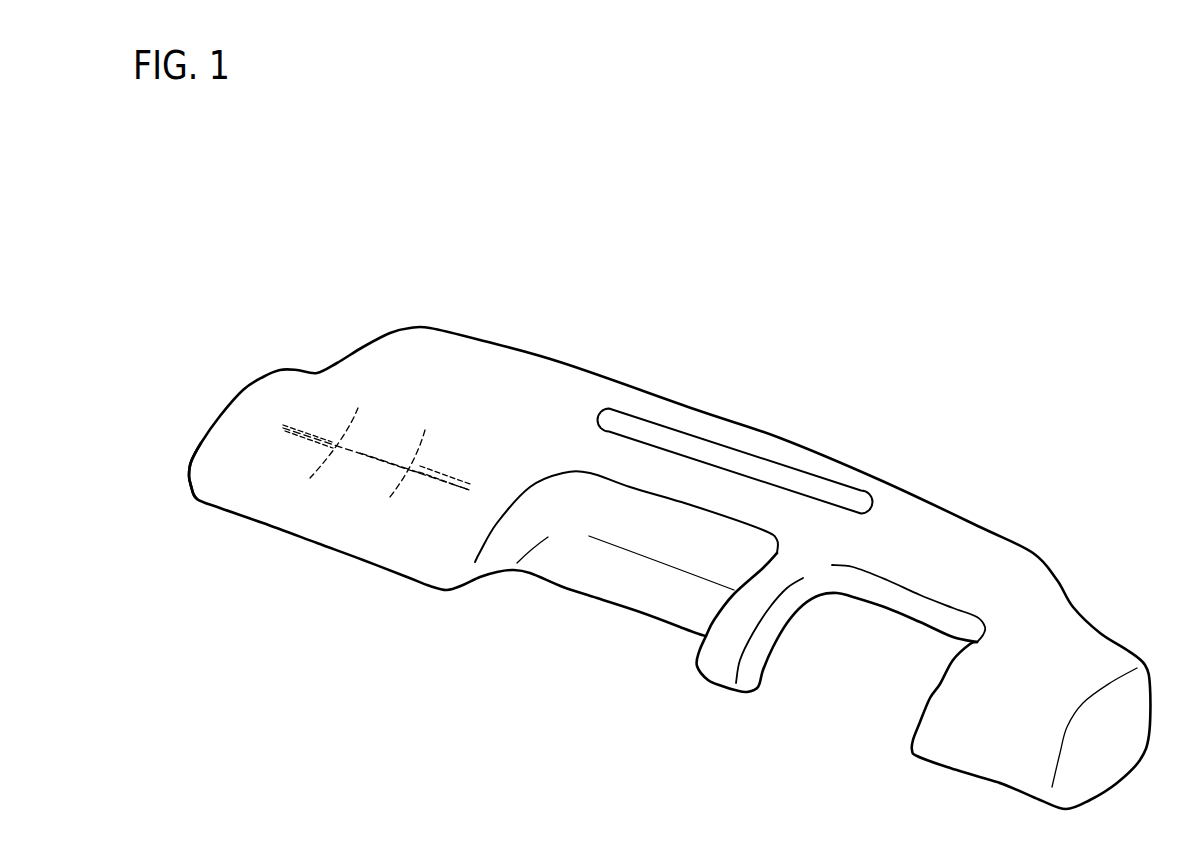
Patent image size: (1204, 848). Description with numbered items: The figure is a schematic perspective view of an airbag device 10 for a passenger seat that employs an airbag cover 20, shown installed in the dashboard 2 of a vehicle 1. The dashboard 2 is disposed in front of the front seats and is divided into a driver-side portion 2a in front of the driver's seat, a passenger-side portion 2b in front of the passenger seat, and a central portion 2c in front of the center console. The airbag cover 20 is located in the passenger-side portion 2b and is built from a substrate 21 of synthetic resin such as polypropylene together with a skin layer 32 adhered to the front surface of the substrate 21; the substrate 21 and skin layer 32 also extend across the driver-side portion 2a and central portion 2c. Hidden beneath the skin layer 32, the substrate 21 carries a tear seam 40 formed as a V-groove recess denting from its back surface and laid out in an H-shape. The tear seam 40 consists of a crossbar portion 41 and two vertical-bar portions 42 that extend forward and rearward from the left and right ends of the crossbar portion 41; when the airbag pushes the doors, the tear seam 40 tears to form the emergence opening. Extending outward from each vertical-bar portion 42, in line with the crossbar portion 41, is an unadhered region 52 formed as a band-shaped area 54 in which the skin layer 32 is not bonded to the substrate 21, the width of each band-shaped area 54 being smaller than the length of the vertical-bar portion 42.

The vehicle 1 is at (775, 322).
The dashboard 2 is at (669, 529).
The driver-side portion 2a is at (1020, 460).
The passenger-side portion 2b is at (483, 320).
The central portion 2c is at (788, 407).
The airbag device 10 is at (329, 506).
The airbag cover 20 is at (479, 585).
The substrate 21 is at (232, 500).
The skin layer 32 is at (213, 477).
The tear seam 40 is at (382, 445).
The crossbar portion 41 is at (383, 475).
The vertical-bar portion 42 is at (338, 423).
The unadhered region 52 is at (316, 464).
The band-shaped area 54 is at (273, 417).